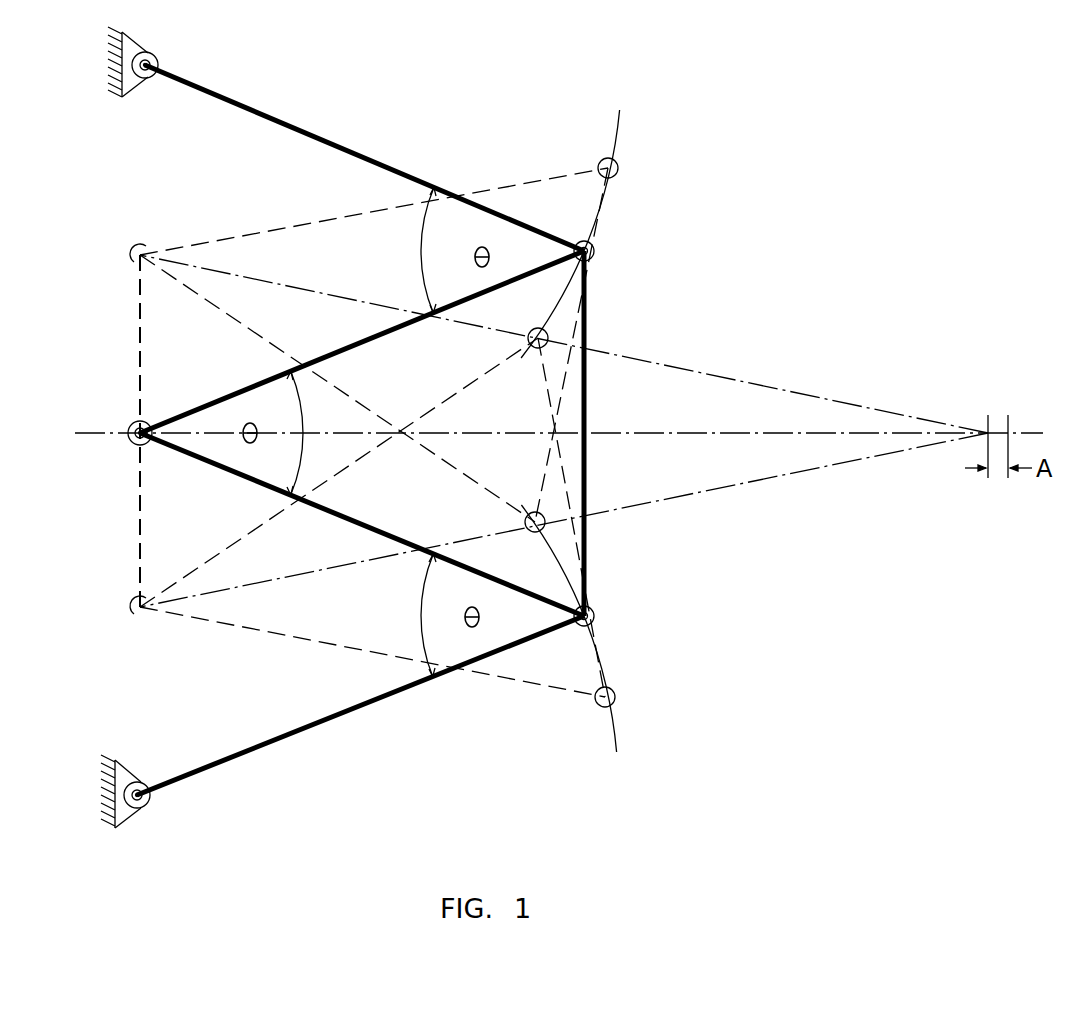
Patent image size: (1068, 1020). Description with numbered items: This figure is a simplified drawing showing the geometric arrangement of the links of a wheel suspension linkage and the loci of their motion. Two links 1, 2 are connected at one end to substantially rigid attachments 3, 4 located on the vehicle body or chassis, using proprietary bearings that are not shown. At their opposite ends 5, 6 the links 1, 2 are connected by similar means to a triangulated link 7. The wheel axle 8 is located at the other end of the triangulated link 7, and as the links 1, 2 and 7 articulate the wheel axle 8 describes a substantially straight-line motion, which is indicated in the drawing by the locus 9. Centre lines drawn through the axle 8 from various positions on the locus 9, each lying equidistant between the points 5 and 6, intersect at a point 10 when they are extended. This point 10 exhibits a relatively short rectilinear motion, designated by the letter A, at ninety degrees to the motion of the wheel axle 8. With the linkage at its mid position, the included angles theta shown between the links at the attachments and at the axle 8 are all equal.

The link 1 is at (302, 127).
The link 2 is at (347, 712).
The rigid attachment 3 is at (153, 57).
The rigid attachment 4 is at (147, 802).
The end of link 5 is at (598, 248).
The end of link 6 is at (597, 619).
The triangulated link 7 is at (585, 538).
The wheel axle 8 is at (130, 443).
The locus 9 is at (137, 343).
The point 10 is at (990, 431).